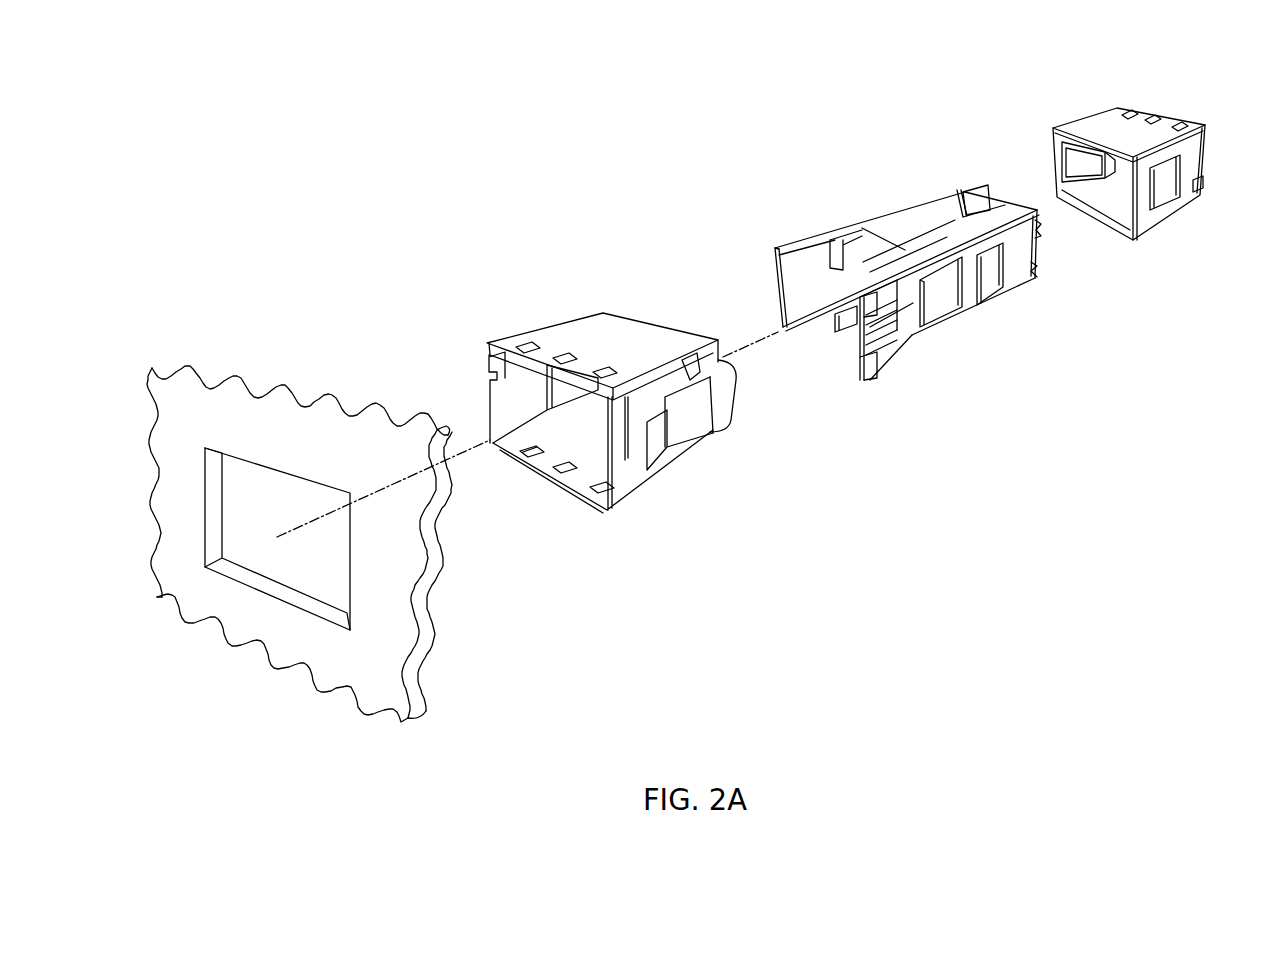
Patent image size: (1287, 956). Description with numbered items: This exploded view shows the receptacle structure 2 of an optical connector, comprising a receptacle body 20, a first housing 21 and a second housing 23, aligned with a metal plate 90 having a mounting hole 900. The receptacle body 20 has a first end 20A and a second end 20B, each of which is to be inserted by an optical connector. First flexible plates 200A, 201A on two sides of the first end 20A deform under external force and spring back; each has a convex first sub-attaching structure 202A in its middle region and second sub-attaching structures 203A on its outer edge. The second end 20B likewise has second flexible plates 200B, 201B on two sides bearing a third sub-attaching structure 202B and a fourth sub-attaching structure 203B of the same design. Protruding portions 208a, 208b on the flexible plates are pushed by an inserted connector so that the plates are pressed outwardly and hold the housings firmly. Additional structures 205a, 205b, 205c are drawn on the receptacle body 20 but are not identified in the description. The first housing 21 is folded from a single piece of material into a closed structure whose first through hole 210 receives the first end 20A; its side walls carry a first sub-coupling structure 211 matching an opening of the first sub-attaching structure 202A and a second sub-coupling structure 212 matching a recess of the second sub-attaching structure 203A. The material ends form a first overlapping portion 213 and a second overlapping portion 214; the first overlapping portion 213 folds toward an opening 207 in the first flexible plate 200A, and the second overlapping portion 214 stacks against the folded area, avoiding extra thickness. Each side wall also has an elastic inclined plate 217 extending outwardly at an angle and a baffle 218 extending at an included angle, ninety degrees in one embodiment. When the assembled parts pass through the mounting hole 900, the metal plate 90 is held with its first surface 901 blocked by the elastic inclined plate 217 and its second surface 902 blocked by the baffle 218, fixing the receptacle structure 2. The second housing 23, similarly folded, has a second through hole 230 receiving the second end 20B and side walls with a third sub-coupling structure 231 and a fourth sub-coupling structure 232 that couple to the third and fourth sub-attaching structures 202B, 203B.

The receptacle structure 2 is at (672, 182).
The metal plate 90 is at (321, 521).
The mounting hole 900 is at (342, 583).
The first surface 901 is at (273, 636).
The second surface 902 is at (430, 630).
The first housing 21 is at (650, 397).
The first through hole 210 is at (548, 444).
The first sub-coupling structure 211 is at (700, 376).
The second sub-coupling structure 212 is at (620, 490).
The first overlapping portion 213 is at (573, 465).
The second overlapping portion 214 is at (670, 447).
The elastic inclined plate 217 is at (703, 433).
The baffle 218 is at (732, 393).
The receptacle body 20 is at (904, 288).
The first end 20A is at (850, 376).
The second end 20B is at (1024, 225).
The first flexible plate 200A is at (887, 360).
The second flexible plate 200B is at (1040, 252).
The first flexible plate 201A is at (773, 287).
The second flexible plate 201B is at (957, 195).
The first sub-attaching structure 202A is at (943, 317).
The third sub-attaching structure 202B is at (992, 280).
The second sub-attaching structure 203A is at (872, 377).
The fourth sub-attaching structure 203B is at (1037, 250).
The first positioning block 205a is at (838, 245).
The second positioning block 205b is at (825, 330).
The third positioning block 205c is at (953, 190).
The opening 207 is at (893, 340).
The protruding portion 208a is at (773, 250).
The protruding portion 208b is at (780, 324).
The second housing 23 is at (1156, 149).
The second through hole 230 is at (1095, 209).
The third sub-coupling structure 231 is at (1165, 207).
The fourth sub-coupling structure 232 is at (1200, 190).